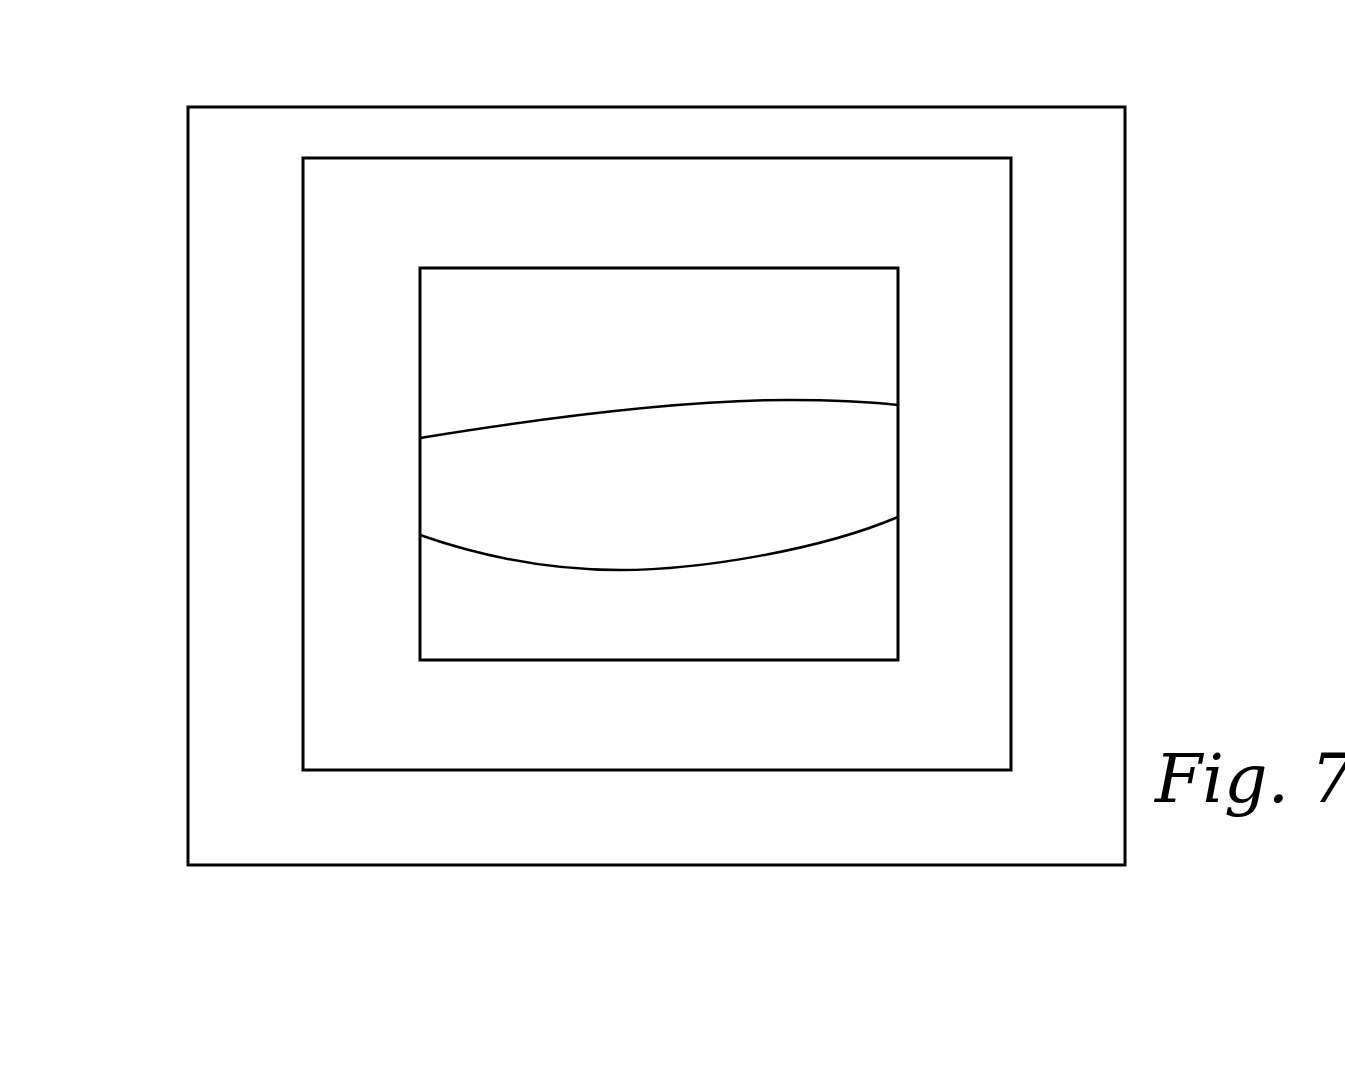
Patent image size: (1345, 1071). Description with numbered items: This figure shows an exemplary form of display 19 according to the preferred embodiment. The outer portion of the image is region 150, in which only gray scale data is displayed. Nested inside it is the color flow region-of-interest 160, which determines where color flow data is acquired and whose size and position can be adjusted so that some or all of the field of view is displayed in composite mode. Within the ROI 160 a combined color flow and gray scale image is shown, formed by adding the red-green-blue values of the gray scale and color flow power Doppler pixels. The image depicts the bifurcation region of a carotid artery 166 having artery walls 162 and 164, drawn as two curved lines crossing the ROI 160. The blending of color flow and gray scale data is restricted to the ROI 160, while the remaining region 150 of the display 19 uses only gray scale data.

The display 19 is at (360, 107).
The region 150 is at (302, 265).
The color flow region-of-interest 160 is at (553, 268).
The artery wall 162 is at (538, 417).
The artery wall 164 is at (705, 565).
The carotid artery 166 is at (868, 455).